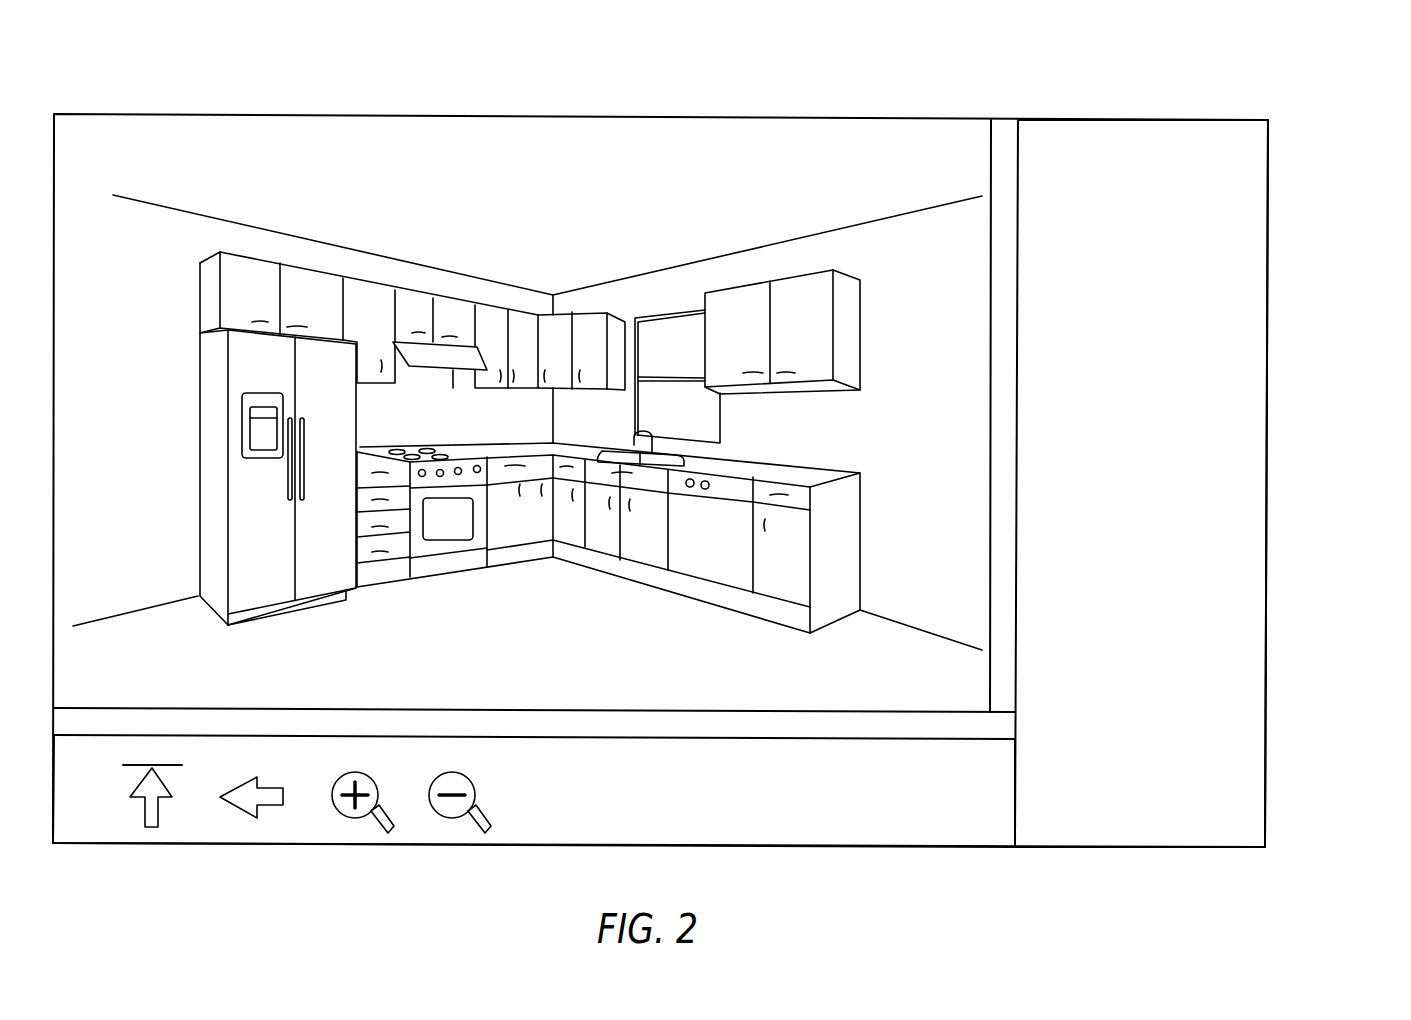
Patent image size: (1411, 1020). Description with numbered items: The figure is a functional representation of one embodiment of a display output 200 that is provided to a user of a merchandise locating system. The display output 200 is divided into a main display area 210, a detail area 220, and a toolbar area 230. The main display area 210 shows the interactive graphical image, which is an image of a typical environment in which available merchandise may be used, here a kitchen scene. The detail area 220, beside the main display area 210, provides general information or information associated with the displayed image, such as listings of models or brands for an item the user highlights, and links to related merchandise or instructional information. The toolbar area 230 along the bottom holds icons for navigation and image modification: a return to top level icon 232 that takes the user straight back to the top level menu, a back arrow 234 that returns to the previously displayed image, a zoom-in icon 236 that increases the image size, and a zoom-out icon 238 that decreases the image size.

The display output 200 is at (1316, 130).
The main display area 210 is at (885, 125).
The detail area 220 is at (1197, 895).
The toolbar area 230 is at (882, 838).
The return to top level icon 232 is at (142, 810).
The back arrow 234 is at (238, 810).
The zoom-in icon 236 is at (340, 816).
The zoom-out icon 238 is at (438, 816).